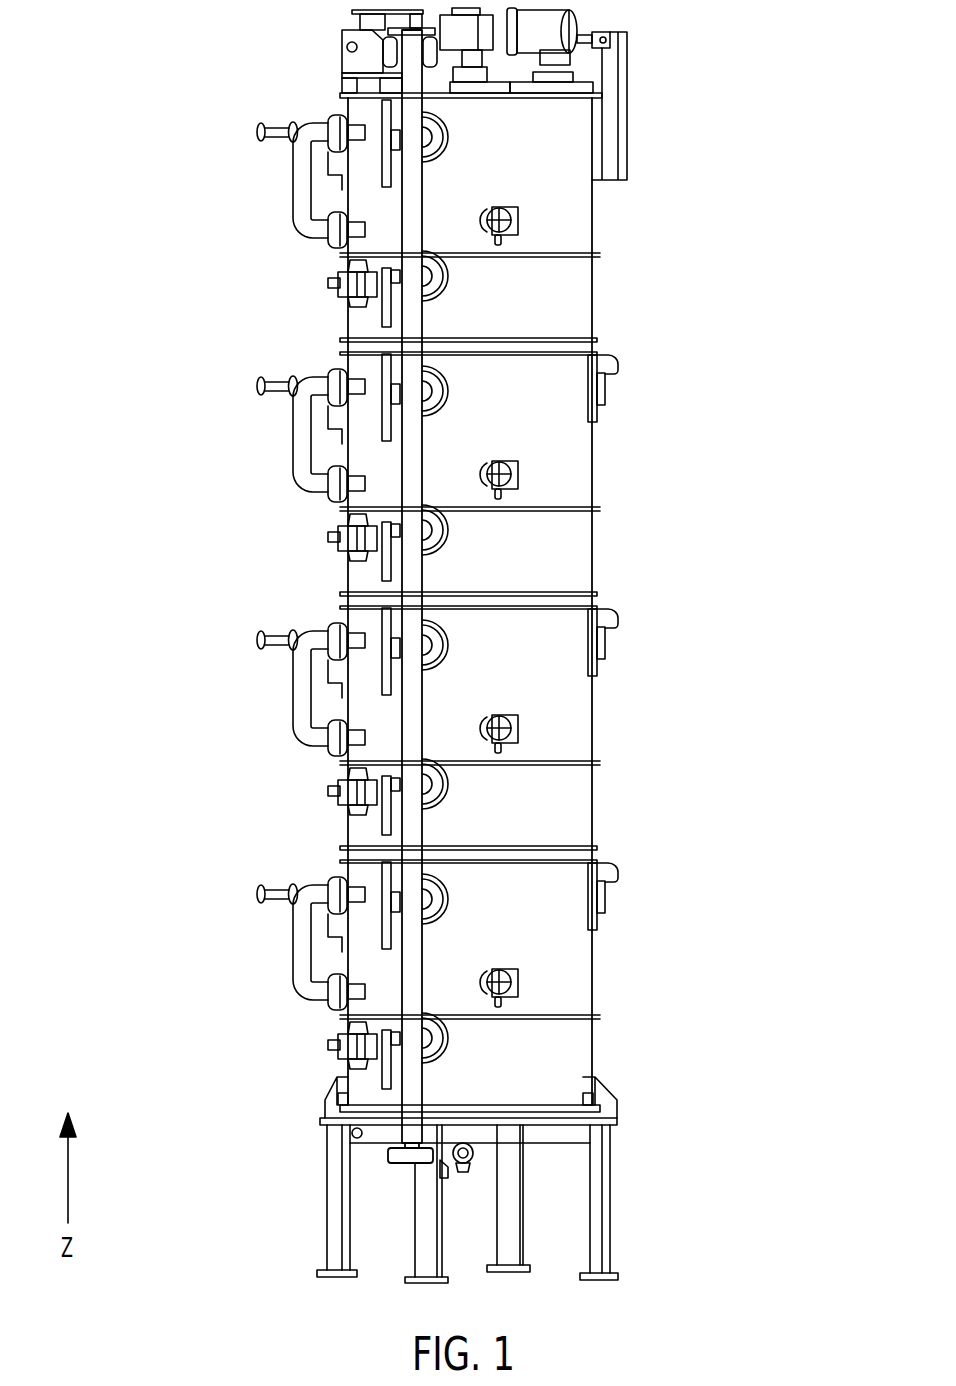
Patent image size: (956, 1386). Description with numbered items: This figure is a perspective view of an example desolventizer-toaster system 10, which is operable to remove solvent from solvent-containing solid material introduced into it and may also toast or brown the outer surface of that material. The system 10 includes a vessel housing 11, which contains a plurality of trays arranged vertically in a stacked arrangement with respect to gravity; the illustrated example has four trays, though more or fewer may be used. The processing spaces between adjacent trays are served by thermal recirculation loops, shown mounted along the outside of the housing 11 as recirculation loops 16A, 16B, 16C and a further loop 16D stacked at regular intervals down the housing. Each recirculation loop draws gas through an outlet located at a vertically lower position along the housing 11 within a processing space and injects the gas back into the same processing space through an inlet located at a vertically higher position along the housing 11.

The desolventizer-toaster system 10 is at (752, 80).
The vessel housing 11 is at (575, 433).
The recirculation loop 16A is at (255, 193).
The recirculation loop 16B is at (255, 450).
The recirculation loop 16C is at (255, 708).
The fourth processing module 16D is at (255, 967).